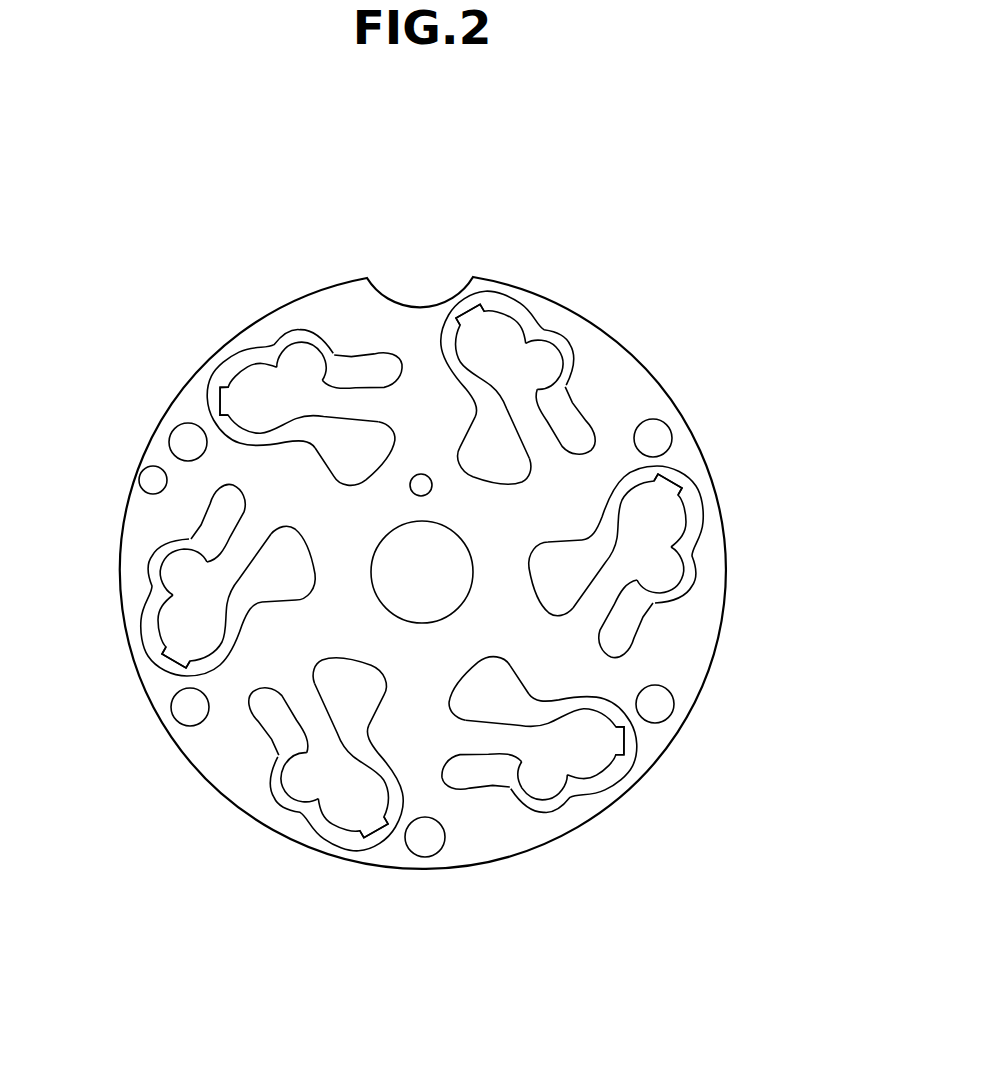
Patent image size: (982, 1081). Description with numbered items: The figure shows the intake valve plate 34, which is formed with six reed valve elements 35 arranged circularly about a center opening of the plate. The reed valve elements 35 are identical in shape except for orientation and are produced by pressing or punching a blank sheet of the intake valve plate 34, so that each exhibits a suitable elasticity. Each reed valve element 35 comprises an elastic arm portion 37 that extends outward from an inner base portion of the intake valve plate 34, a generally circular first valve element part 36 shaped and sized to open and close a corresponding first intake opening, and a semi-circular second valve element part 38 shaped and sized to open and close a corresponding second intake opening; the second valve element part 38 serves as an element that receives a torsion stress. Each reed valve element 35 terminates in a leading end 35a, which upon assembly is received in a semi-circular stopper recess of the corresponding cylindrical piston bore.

The intake valve plate 34 is at (321, 265).
The reed valve element 35 is at (212, 426).
The leading end 35a is at (223, 393).
The first valve element part 36 is at (255, 390).
The elastic arm portion 37 is at (353, 407).
The second valve element part 38 is at (305, 370).